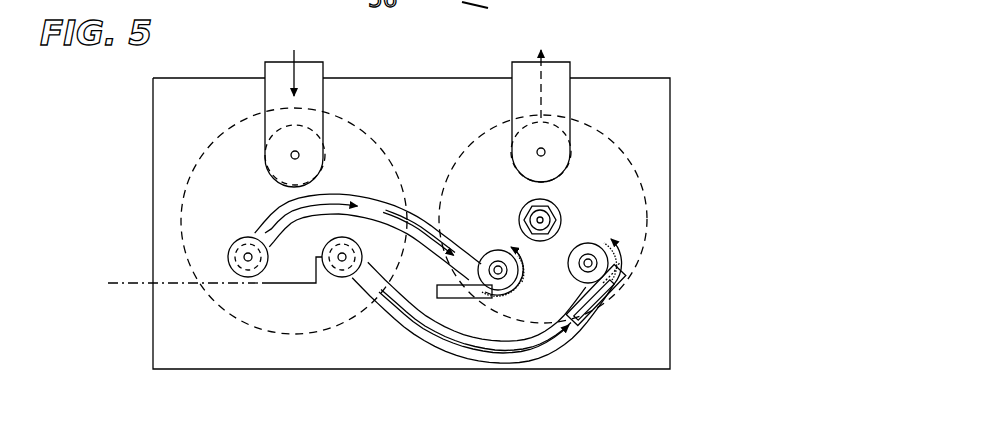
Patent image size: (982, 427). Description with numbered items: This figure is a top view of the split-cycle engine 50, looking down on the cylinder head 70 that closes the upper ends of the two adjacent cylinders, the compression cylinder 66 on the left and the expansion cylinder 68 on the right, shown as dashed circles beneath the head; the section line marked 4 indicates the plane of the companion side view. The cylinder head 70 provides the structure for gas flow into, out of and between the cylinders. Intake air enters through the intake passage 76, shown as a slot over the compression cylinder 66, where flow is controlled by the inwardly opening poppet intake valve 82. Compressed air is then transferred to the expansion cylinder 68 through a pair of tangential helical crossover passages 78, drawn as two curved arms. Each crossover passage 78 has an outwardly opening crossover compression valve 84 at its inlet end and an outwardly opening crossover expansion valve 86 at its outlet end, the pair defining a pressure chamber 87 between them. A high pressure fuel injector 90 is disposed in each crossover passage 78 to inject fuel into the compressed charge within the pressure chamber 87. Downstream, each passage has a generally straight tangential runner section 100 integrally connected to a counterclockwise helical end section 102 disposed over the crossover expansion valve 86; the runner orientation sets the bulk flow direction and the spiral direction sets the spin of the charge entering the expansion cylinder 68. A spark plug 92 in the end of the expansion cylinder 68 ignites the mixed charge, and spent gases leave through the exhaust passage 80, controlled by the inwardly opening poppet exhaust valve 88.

The section line 4- 4 is at (133, 257).
The split-cycle engine 50 is at (649, 62).
The compression cylinder 66 is at (227, 312).
The expansion cylinder 68 is at (624, 156).
The cylinder head 70 is at (679, 89).
The intake passage 76 is at (287, 62).
The tangential helical crossover passage 78 is at (413, 340).
The exhaust passage 80 is at (562, 62).
The intake valve 82 is at (298, 151).
The crossover compression valve 84 is at (342, 262).
The crossover expansion valve 86 is at (589, 259).
The pressure chamber 87 is at (508, 354).
The exhaust valve 88 is at (544, 149).
The high pressure fuel injector 90 is at (588, 322).
The spark plug 92 is at (552, 206).
The tangential runner section 100 is at (600, 306).
The helical end section 102 is at (529, 262).